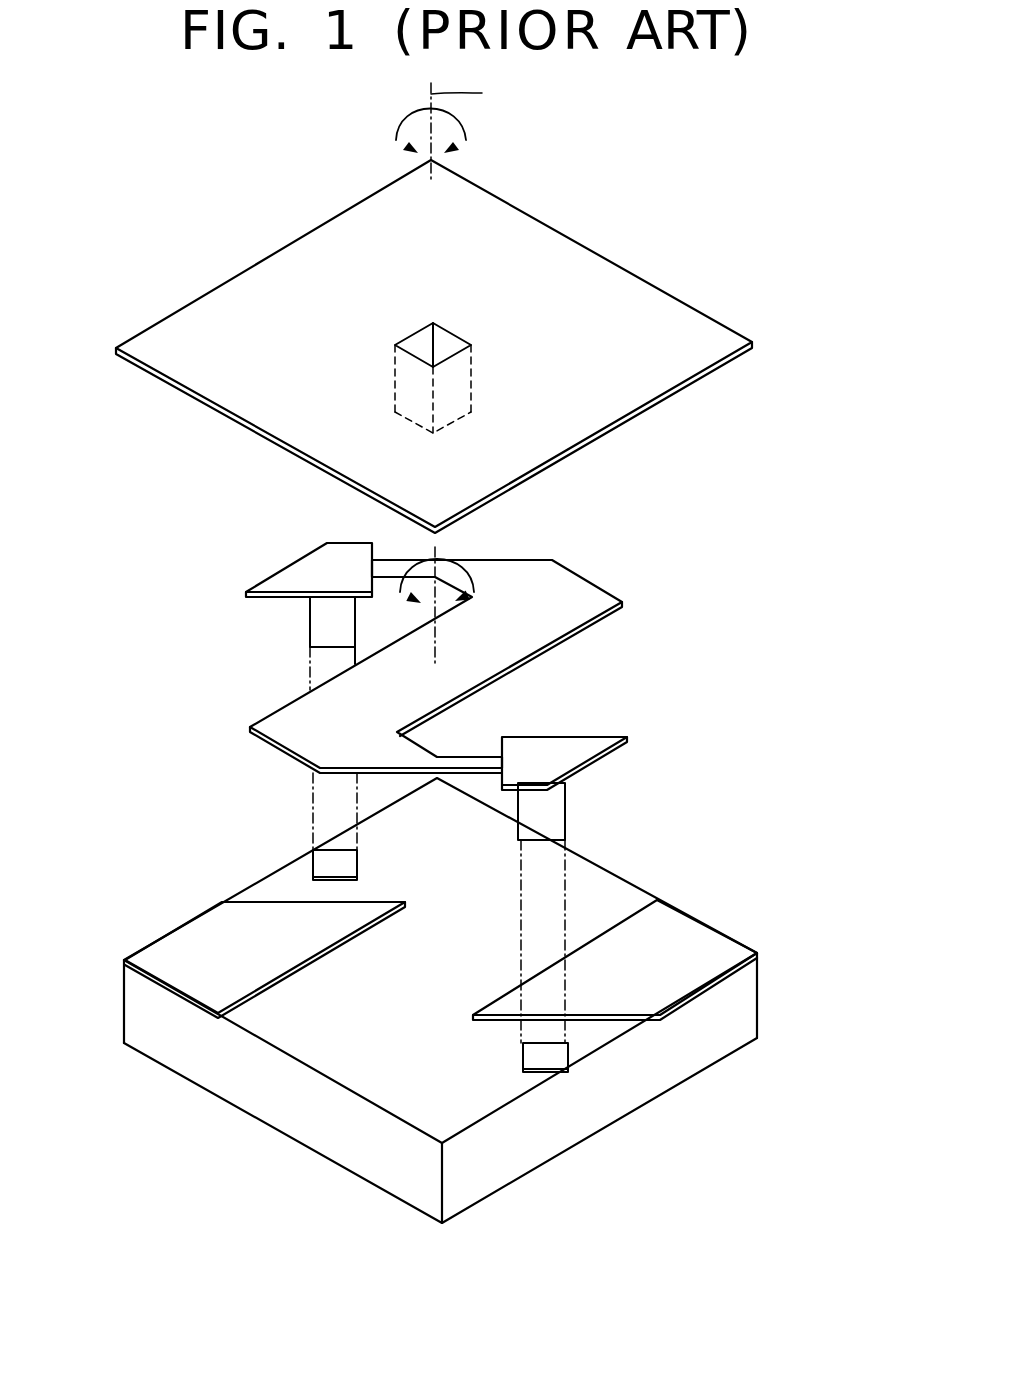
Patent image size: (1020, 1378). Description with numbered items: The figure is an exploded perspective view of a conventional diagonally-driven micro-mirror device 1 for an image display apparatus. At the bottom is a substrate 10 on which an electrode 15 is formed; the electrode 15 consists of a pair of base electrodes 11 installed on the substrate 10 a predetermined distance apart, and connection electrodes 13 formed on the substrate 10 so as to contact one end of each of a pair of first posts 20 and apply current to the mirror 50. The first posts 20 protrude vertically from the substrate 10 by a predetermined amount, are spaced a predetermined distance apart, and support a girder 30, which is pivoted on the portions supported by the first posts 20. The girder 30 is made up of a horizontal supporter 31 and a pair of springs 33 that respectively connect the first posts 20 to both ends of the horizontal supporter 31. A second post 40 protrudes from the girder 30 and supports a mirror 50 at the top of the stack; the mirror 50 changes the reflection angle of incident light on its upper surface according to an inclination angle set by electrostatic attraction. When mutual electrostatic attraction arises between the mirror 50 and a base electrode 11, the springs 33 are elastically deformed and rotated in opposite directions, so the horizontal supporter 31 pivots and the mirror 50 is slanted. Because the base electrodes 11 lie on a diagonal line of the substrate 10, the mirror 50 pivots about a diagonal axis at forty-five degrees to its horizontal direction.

The micro-mirror device 1 is at (668, 205).
The substrate 10 is at (287, 1103).
The base electrodes 11 is at (205, 952).
The connection electrodes 13 is at (327, 863).
The electrode 15 is at (98, 815).
The first posts 20 is at (323, 625).
The girder 30 is at (205, 565).
The horizontal supporter 31 is at (562, 595).
The springs 33 is at (388, 565).
The second post 40 is at (454, 400).
The mirror 50 is at (275, 317).